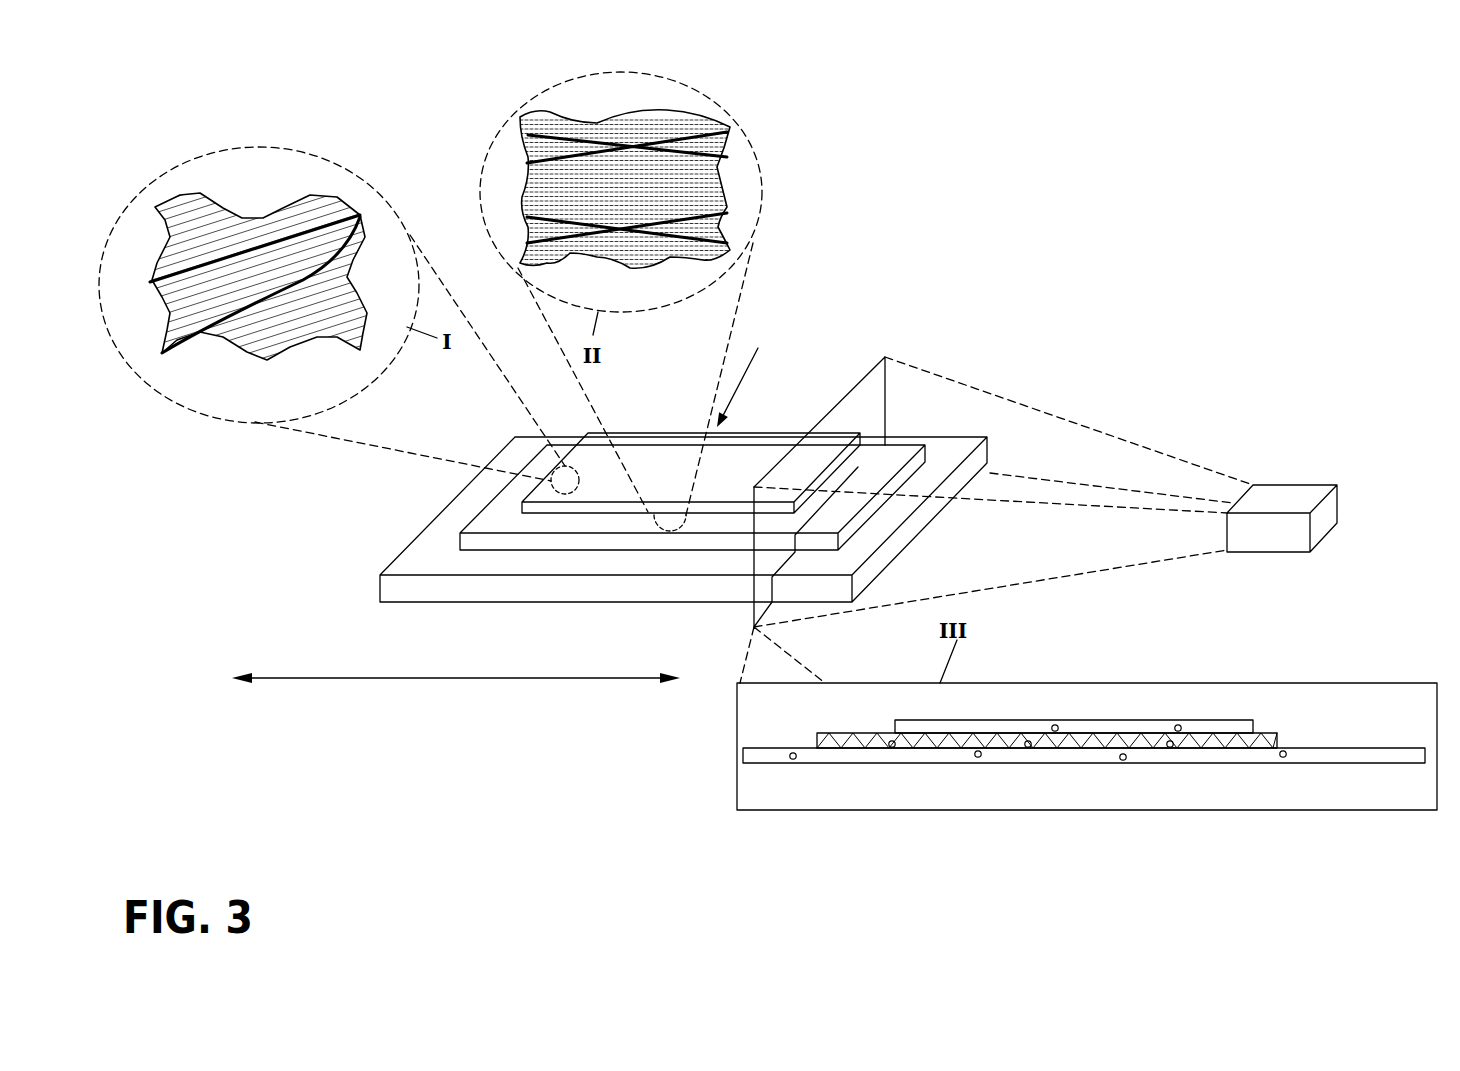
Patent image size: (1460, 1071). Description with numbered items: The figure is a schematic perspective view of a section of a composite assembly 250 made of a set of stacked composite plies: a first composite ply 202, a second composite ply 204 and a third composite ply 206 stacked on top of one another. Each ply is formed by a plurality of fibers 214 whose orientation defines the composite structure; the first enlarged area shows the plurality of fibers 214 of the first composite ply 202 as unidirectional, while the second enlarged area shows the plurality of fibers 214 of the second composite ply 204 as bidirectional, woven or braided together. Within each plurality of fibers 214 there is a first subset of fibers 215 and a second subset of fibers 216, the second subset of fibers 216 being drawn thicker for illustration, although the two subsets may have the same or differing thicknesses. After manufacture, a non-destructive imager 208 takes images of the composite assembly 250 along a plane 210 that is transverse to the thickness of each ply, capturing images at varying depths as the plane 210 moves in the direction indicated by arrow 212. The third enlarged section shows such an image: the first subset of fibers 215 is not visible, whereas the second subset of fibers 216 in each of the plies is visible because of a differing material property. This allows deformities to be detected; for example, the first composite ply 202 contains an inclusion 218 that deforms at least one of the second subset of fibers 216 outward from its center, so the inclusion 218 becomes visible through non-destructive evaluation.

The first composite ply 202 is at (583, 440).
The second composite ply 204 is at (517, 473).
The third composite ply 206 is at (378, 584).
The non-destructive imager 208 is at (1293, 480).
The plane 210 is at (838, 397).
The arrow 212 is at (477, 680).
The plurality of fibers 214 is at (380, 198).
The first subset of fibers 215 is at (303, 214).
The second subset of fibers 216 is at (237, 248).
The inclusion 218 is at (346, 283).
The composite assembly 250 is at (755, 377).